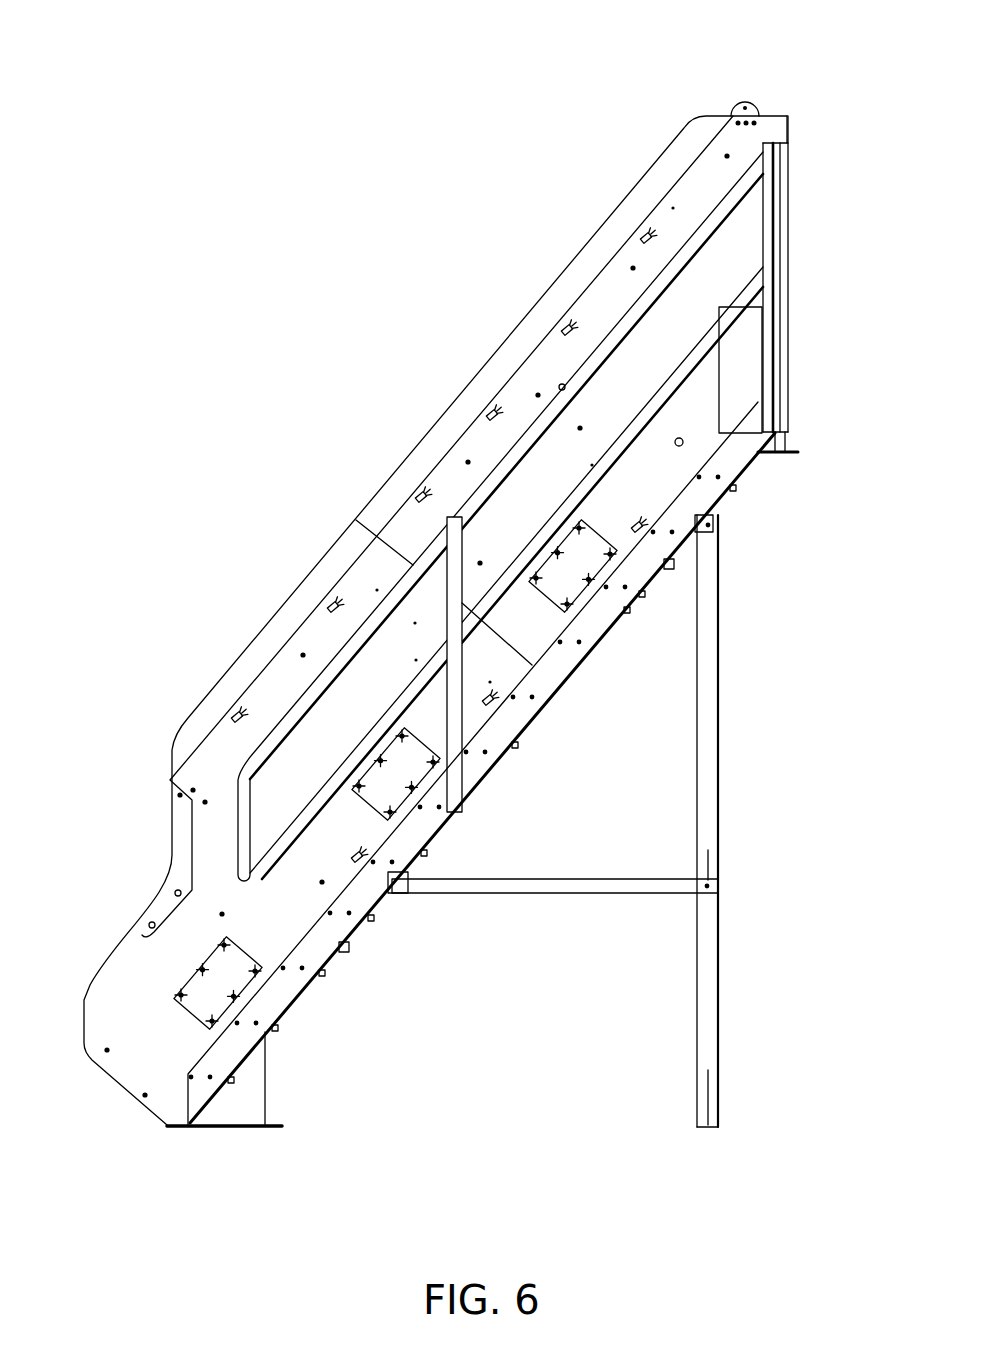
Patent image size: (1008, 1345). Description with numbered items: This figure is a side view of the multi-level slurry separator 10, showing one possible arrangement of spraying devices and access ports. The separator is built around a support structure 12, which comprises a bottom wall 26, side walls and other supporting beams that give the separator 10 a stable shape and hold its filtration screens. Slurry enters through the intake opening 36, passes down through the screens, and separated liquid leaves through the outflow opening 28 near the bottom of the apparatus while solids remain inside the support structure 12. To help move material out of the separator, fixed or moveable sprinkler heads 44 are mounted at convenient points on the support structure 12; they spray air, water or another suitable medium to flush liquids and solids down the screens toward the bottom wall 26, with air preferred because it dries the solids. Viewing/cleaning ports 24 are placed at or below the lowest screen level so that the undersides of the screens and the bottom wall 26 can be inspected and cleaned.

The multi-level slurry separator 10 is at (464, 616).
The support structure 12 is at (753, 776).
The viewing/cleaning ports 24 is at (228, 977).
The bottom wall 26 is at (537, 740).
The outflow opening 28 is at (222, 1133).
The intake opening 36 is at (770, 465).
The sprinkler heads 44 is at (484, 403).